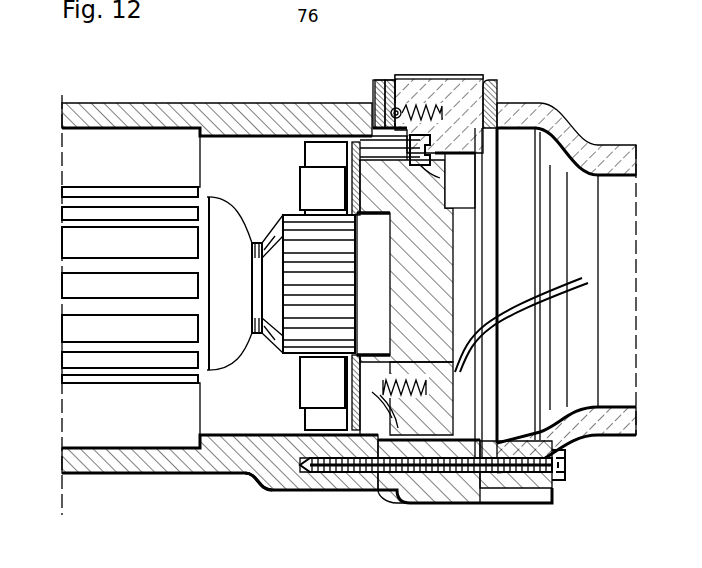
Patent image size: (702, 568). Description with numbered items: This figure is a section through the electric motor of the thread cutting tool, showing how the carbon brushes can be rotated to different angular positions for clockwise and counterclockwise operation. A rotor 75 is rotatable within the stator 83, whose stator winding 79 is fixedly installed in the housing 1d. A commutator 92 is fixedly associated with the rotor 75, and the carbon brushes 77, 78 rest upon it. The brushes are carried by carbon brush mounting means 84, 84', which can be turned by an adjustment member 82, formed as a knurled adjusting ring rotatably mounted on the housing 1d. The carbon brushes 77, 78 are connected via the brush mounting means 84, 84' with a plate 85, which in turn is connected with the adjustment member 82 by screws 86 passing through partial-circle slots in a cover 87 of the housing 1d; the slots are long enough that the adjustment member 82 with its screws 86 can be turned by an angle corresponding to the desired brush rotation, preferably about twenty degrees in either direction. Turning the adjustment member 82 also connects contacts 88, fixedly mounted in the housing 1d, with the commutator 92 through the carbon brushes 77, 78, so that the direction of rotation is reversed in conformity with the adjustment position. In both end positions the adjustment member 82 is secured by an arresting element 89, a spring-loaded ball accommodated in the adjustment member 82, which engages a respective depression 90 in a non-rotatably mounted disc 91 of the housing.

The housing 1d is at (125, 110).
The rotor 75 is at (130, 325).
The carbon brush 77 is at (318, 148).
The carbon brush 78 is at (308, 424).
The stator winding 79 is at (76, 162).
The adjustment member 82 is at (430, 130).
The stator 83 is at (163, 153).
The carbon brush mounting means 84 is at (300, 188).
The carbon brush mounting means 84' is at (294, 386).
The plate 85 is at (328, 473).
The screw 86 is at (433, 191).
The cover 87 is at (443, 272).
The contacts 88 is at (384, 476).
The arresting element 89 is at (400, 97).
The depression 90 is at (379, 80).
The disc 91 is at (374, 80).
The commutator 92 is at (300, 328).